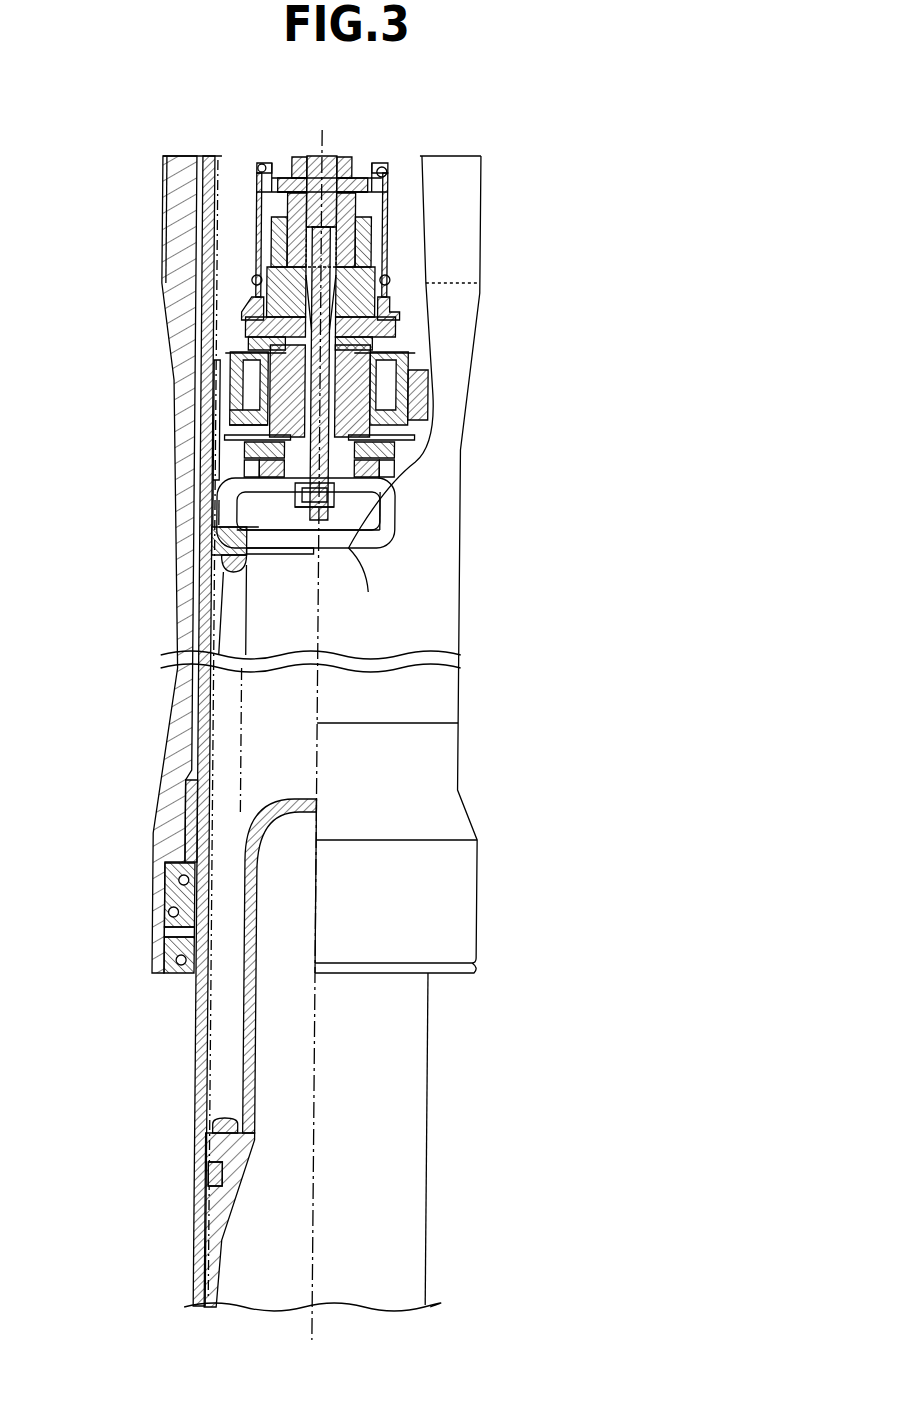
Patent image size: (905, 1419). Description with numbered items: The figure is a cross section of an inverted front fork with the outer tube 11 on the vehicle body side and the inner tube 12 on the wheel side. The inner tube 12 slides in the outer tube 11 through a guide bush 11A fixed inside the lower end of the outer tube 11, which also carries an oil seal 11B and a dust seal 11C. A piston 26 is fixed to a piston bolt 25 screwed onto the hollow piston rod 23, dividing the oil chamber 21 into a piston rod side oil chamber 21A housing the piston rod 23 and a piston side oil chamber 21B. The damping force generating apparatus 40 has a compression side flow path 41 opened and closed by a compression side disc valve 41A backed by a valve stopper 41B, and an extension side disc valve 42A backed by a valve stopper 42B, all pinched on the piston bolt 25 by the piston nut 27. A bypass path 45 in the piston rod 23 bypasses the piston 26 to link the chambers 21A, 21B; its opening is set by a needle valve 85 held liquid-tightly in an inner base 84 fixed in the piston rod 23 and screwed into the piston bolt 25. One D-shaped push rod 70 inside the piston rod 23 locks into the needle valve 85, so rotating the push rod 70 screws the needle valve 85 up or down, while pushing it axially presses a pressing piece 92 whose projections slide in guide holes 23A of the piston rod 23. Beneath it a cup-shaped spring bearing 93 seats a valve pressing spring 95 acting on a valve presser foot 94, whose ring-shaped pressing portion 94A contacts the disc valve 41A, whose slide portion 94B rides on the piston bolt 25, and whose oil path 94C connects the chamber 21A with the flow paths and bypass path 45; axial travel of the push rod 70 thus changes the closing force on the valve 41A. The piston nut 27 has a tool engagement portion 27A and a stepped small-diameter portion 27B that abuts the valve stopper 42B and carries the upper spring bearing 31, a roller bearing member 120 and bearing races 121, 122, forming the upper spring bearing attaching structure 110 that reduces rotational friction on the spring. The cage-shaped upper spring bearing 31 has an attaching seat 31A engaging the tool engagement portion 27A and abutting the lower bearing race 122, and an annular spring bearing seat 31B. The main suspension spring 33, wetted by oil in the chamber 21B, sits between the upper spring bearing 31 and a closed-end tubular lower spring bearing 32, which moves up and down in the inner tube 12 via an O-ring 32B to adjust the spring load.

The outer tube 11 is at (163, 202).
The guide bush 11A is at (186, 822).
The oil seal 11B is at (170, 896).
The dust seal 11C is at (172, 966).
The inner tube 12 is at (197, 1065).
The oil chamber 21 is at (237, 165).
The piston rod side oil chamber 21A is at (167, 173).
The piston side oil chamber 21B is at (280, 748).
The piston rod 23 is at (345, 157).
The guide holes 23A is at (362, 170).
The piston bolt 25 is at (376, 205).
The piston 26 is at (412, 372).
The piston nut 27 is at (372, 550).
The tool engagement portion 27A is at (400, 514).
The small-diameter portion 27B is at (395, 500).
The upper spring bearing 31 is at (212, 538).
The attaching seat 31A is at (216, 463).
The annular spring bearing seat 31B is at (218, 545).
The lower spring bearing 32 is at (242, 1150).
The O-ring 32B is at (208, 1168).
The main suspension spring 33 is at (232, 566).
The damping force generating apparatus 40 is at (235, 385).
The compression side flow path 41 is at (272, 400).
The compression side disc valve 41A is at (250, 348).
The valve stopper 41B is at (262, 325).
The extension side disc valve 42A is at (240, 412).
The valve stopper 42B is at (262, 430).
The bypass path 45 is at (406, 422).
The push rod 70 is at (297, 162).
The inner base 84 is at (262, 248).
The needle valve 85 is at (352, 297).
The pressing piece 92 is at (222, 160).
The spring bearing 93 is at (388, 182).
The valve presser foot 94 is at (398, 322).
The pressing portion 94A is at (398, 350).
The slide portion 94B is at (392, 280).
The oil path 94C is at (250, 290).
The valve pressing spring 95 is at (364, 235).
The upper spring bearing attaching structure 110 is at (230, 513).
The bearing member 120 is at (396, 466).
The upper bearing race 121 is at (392, 448).
The lower bearing race 122 is at (380, 490).